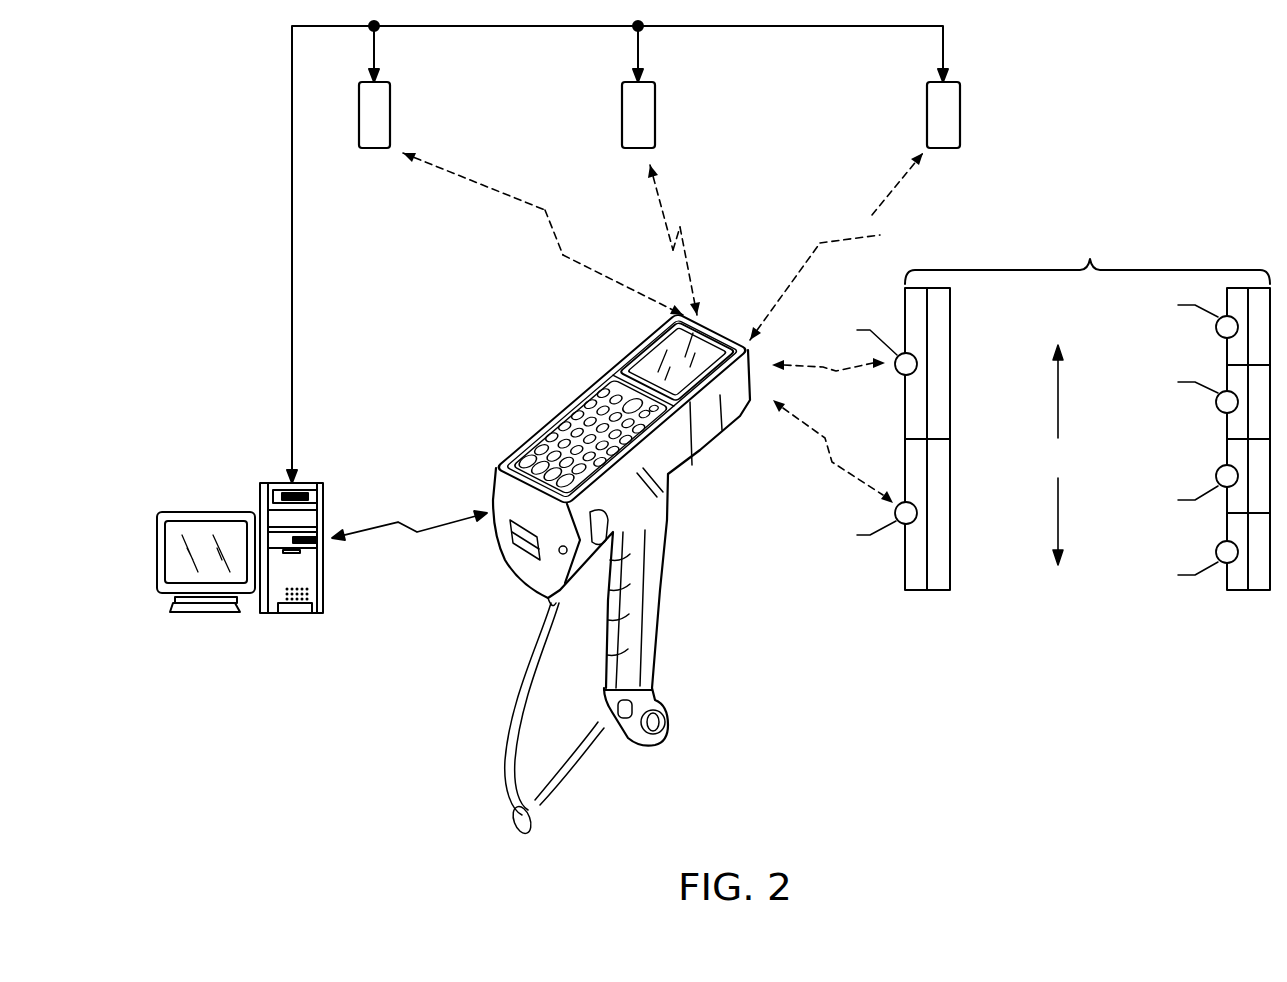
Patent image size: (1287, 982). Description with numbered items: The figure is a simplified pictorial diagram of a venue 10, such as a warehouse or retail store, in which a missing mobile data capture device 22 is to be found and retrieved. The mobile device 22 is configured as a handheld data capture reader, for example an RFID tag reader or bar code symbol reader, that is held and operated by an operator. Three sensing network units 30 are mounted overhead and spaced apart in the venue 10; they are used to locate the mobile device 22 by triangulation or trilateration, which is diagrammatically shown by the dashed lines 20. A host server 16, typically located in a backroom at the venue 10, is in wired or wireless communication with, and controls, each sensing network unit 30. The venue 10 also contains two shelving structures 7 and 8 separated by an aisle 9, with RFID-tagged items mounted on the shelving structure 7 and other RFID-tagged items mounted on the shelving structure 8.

The sensing network unit 30 is at (696, 112).
The dashed lines 20 is at (663, 246).
The mobile data capture device 22 is at (703, 486).
The host server 16 is at (322, 567).
The venue 10 is at (1087, 256).
The shelving structure 7 is at (940, 288).
The shelving structure 8 is at (1240, 288).
The aisle 9 is at (1067, 455).